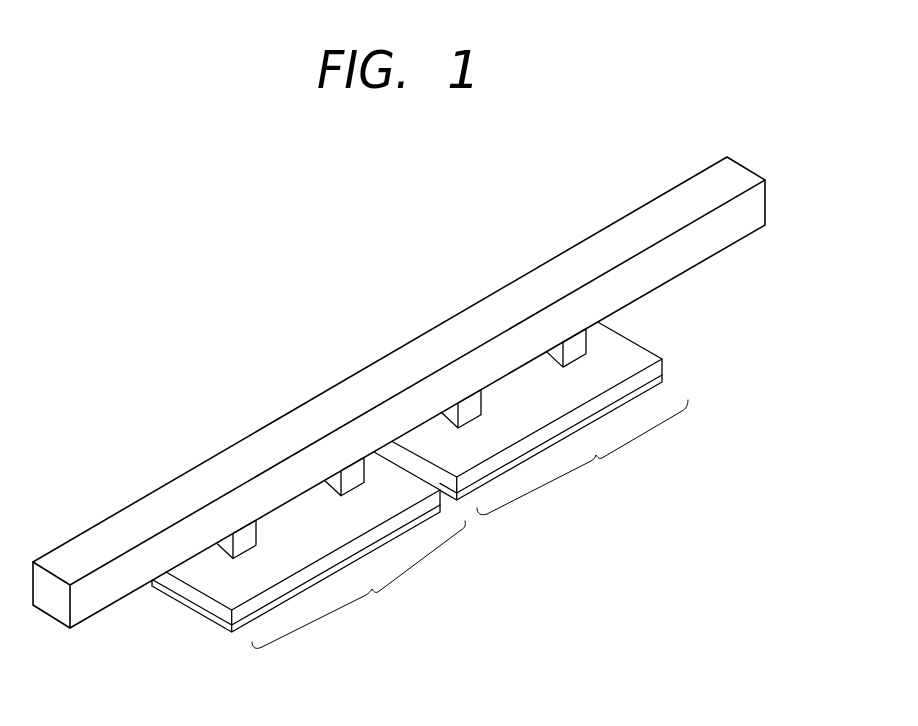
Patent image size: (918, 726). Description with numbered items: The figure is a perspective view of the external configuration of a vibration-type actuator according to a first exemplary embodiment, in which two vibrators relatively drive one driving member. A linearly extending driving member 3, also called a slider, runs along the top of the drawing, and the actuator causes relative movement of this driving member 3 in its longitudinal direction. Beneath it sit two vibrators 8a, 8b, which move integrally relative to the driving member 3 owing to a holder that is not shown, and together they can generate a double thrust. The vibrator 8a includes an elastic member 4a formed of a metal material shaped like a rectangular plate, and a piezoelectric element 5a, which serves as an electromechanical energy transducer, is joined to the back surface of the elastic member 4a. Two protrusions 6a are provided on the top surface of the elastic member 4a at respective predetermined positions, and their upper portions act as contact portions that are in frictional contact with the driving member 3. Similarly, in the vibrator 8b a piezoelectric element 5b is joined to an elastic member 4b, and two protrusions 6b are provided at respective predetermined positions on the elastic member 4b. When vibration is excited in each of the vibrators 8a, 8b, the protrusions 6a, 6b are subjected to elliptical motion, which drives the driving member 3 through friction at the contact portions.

The driving member 3 is at (700, 188).
The protrusions 6a is at (473, 410).
The protrusions 6b is at (250, 538).
The elastic member 4a is at (623, 350).
The elastic member 4b is at (218, 585).
The piezoelectric element 5a is at (662, 383).
The piezoelectric element 5b is at (207, 621).
The vibrator 8a is at (582, 457).
The vibrator 8b is at (358, 584).